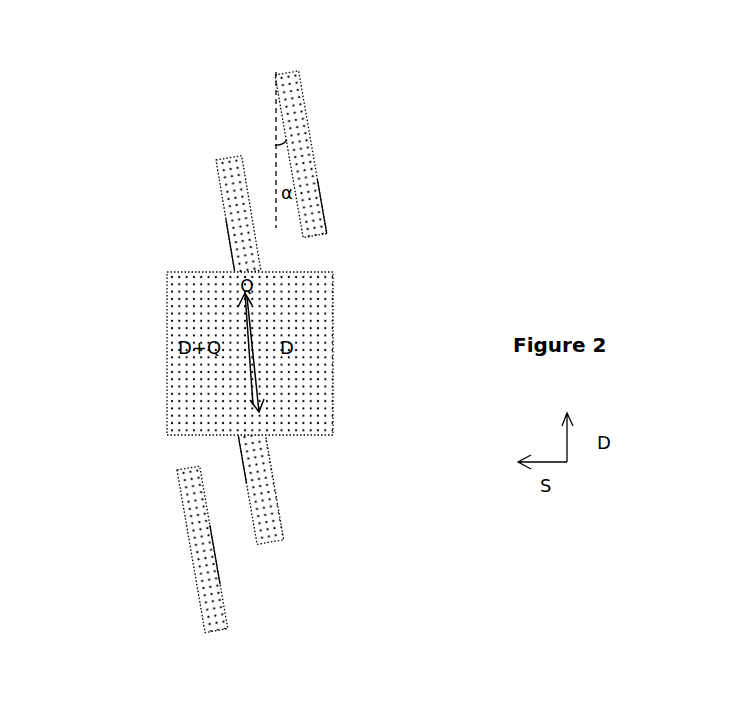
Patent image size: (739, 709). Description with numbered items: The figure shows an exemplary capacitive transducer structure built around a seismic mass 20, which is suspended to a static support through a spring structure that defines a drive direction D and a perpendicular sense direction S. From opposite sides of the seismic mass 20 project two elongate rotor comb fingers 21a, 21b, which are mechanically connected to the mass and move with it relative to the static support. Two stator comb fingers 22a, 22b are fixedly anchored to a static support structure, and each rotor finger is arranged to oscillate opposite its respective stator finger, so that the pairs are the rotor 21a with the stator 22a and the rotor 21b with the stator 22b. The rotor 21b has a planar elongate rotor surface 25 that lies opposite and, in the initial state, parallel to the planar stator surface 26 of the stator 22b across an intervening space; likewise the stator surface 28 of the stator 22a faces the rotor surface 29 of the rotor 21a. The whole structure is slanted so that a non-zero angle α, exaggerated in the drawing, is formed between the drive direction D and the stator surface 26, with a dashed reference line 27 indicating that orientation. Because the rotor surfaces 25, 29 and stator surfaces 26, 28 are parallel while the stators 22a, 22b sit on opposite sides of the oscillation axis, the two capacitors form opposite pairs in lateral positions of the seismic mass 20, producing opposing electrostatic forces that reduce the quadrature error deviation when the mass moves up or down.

The seismic mass 20 is at (317, 354).
The rotor comb finger 21a is at (280, 543).
The rotor comb finger 21b is at (233, 158).
The stator comb finger 22a is at (188, 538).
The stator comb finger 22b is at (324, 222).
The rotor surface 25 is at (259, 258).
The stator surface 26 is at (293, 168).
The surface 27 is at (230, 246).
The stator surface 28 is at (218, 582).
The rotor surface 29 is at (237, 445).